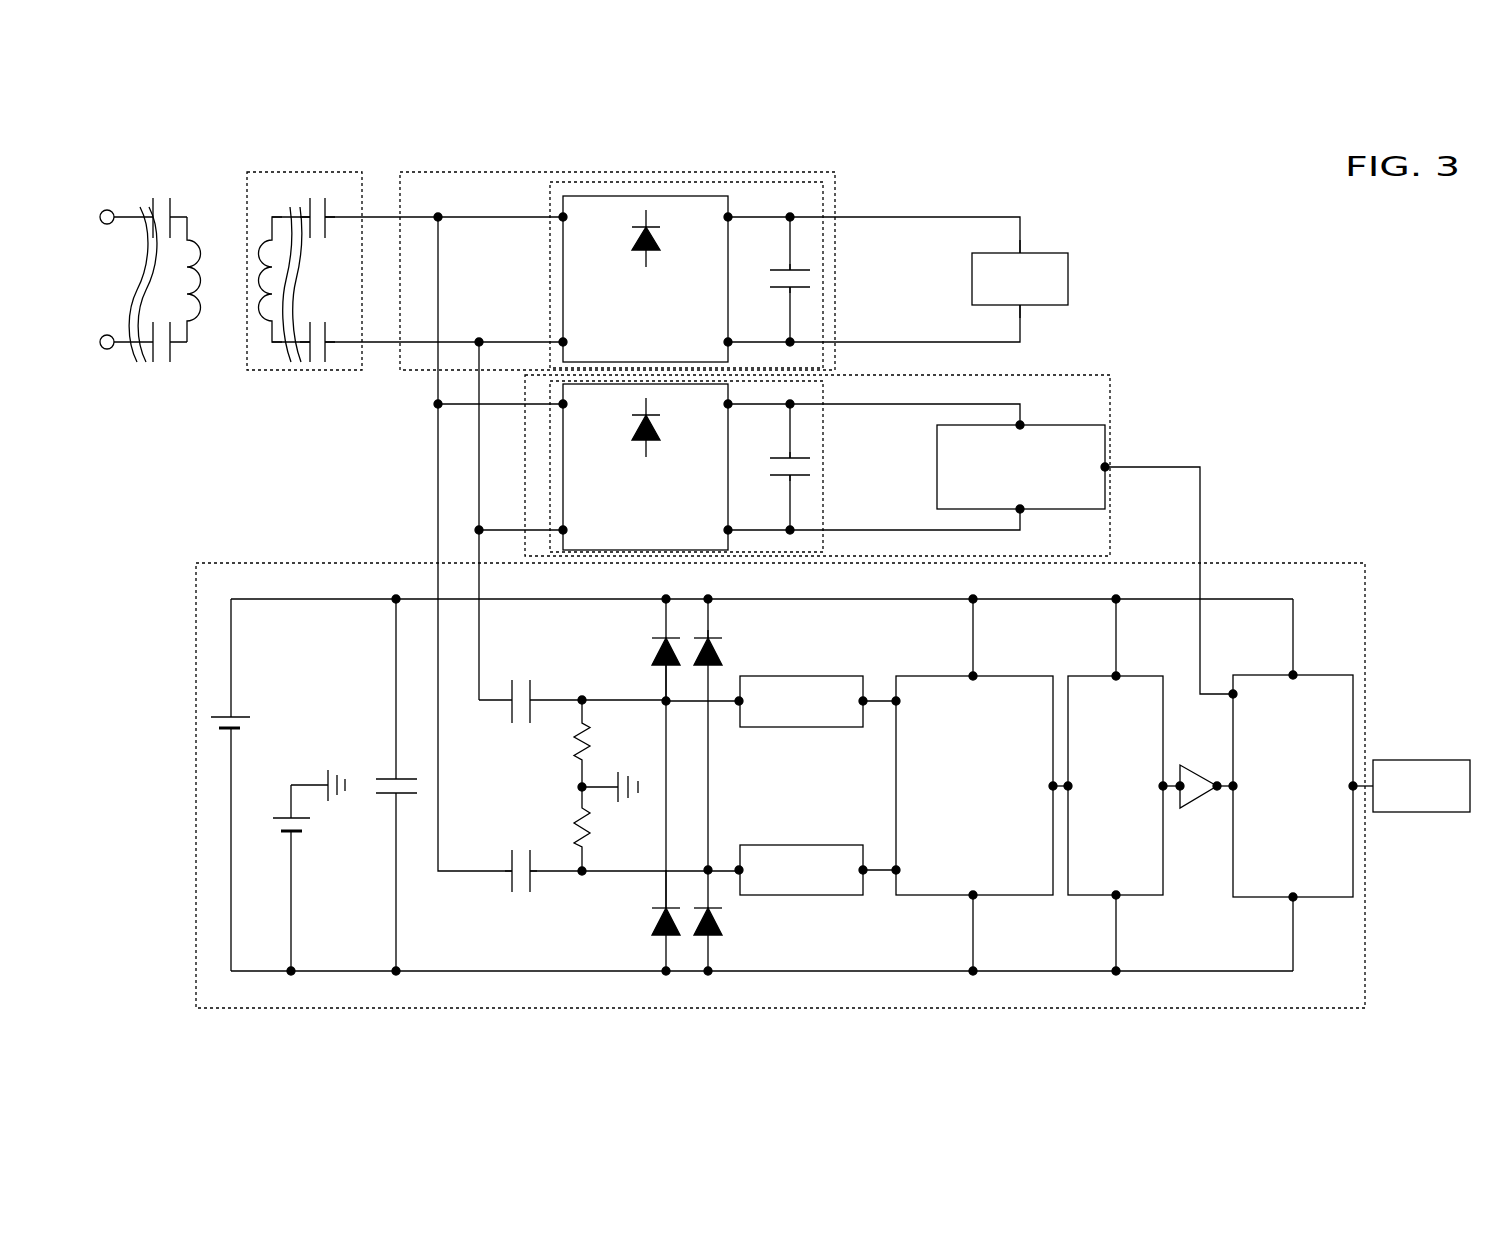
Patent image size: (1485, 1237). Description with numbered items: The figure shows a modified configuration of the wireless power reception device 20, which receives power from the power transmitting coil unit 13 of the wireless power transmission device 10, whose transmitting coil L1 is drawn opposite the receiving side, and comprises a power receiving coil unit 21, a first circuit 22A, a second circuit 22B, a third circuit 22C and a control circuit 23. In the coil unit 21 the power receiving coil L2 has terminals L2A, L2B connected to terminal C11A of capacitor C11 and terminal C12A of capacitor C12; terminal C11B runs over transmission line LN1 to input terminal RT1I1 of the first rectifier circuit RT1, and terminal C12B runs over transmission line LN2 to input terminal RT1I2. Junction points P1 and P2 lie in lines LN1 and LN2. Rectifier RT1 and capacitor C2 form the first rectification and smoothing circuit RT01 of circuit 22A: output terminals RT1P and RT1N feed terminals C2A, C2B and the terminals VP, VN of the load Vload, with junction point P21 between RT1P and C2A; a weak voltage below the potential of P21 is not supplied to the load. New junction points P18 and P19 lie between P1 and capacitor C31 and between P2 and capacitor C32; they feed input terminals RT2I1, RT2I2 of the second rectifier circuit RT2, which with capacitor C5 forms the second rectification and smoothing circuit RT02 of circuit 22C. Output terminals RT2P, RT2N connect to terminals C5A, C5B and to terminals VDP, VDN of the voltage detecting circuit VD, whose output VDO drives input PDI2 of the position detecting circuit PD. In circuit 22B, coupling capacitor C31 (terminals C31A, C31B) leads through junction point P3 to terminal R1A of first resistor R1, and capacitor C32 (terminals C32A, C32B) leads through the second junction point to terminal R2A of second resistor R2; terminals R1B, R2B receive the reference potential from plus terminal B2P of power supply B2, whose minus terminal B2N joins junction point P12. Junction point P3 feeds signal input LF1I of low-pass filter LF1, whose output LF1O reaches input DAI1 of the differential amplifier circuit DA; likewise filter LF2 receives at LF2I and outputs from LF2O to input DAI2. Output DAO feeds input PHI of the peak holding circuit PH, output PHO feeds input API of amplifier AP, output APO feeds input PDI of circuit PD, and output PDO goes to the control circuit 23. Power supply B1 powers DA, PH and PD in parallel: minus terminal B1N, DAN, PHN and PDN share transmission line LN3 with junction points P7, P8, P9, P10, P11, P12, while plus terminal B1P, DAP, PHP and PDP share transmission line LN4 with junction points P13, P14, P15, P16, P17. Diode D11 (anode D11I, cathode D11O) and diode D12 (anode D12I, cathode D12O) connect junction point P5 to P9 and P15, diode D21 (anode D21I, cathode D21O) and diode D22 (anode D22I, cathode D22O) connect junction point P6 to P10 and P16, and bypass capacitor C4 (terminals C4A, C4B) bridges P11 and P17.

The wireless power transmission device 10 is at (132, 210).
The power transmitting coil unit 13 is at (126, 342).
The primary coil L1 is at (185, 275).
The power receiving coil unit 21 is at (247, 310).
The power receiving coil L2 is at (253, 238).
The terminal of power receiving coil L2A is at (260, 212).
The terminal of power receiving coil L2B is at (268, 346).
The capacitor C11 is at (320, 194).
The terminal of capacitor C11 C11A is at (305, 212).
The terminal of capacitor C11 C11B is at (332, 210).
The capacitor C12 is at (313, 372).
The terminal of capacitor C12 C12A is at (303, 352).
The terminal of capacitor C12 C12B is at (332, 352).
The transmission line LN1 is at (525, 216).
The transmission line LN2 is at (520, 341).
The junction point P1 is at (440, 215).
The junction point P2 is at (479, 340).
The junction point P18 is at (436, 406).
The first rectification and smoothing circuit RT01 is at (548, 250).
The first circuit 22A is at (838, 184).
The first rectifier circuit RT1 is at (708, 195).
The input terminal RT1I1 is at (567, 213).
The input terminal RT1I2 is at (568, 336).
The plus output terminal RT1P is at (734, 213).
The minus output terminal RT1N is at (736, 349).
The junction point P21 is at (795, 215).
The capacitor C2 is at (815, 278).
The terminal of capacitor C2 C2A is at (800, 264).
The terminal of capacitor C2 C2B is at (800, 294).
The wireless power reception device 20 is at (927, 188).
The load Vload is at (1068, 280).
The plus power supply terminal of load VP is at (1024, 248).
The minus power supply terminal of load VN is at (1024, 310).
The third circuit 22C is at (1090, 376).
The second rectification and smoothing circuit RT02 is at (826, 548).
The second rectifier circuit RT2 is at (730, 430).
The plus output terminal RT2P is at (735, 398).
The minus output terminal RT2N is at (722, 523).
The input terminal RT2I1 is at (557, 410).
The input terminal RT2I2 is at (568, 524).
The junction point P19 is at (477, 531).
The junction point P15 is at (711, 596).
The capacitor C5 is at (815, 467).
The terminal of capacitor C5 C5A is at (800, 452).
The terminal of capacitor C5 C5B is at (800, 482).
The voltage detecting circuit VD is at (1106, 447).
The plus terminal VDP is at (1028, 422).
The minus terminal VDN is at (1028, 516).
The signal output terminal VDO is at (1111, 472).
The second circuit 22B is at (1330, 562).
The transmission line LN3 is at (1205, 973).
The transmission line LN4 is at (1248, 598).
The junction point P17 is at (394, 597).
The junction point P16 is at (664, 598).
The junction point P14 is at (975, 598).
The junction point P13 is at (1118, 598).
The junction point P12 is at (291, 974).
The junction point P11 is at (396, 974).
The junction point P10 is at (665, 974).
The junction point P9 is at (708, 974).
The junction point P8 is at (974, 974).
The junction point P7 is at (1117, 974).
The junction point P6 is at (681, 786).
The junction point P5 is at (666, 974).
The junction point P3 is at (588, 637).
The power supply B1 is at (210, 725).
The plus terminal B1P is at (211, 713).
The minus terminal B1N is at (211, 734).
The power supply B2 is at (273, 831).
The plus terminal B2P is at (286, 813).
The minus terminal B2N is at (300, 838).
The capacitor C4 is at (386, 802).
The terminal of capacitor C4 C4A is at (395, 800).
The terminal of capacitor C4 C4B is at (386, 775).
The capacitor C32 is at (510, 675).
The terminal of capacitor C32 C32A is at (506, 712).
The terminal of capacitor C32 C32B is at (530, 676).
The capacitor C31 is at (514, 847).
The terminal of capacitor C31 C31A is at (508, 878).
The terminal of capacitor C31 C31B is at (535, 878).
The first resistor R1 is at (601, 827).
The terminal of first resistor R1A is at (578, 863).
The terminal of first resistor R1B is at (588, 780).
The second resistor R2 is at (570, 742).
The terminal of second resistor R2A is at (580, 695).
The terminal of second resistor R2B is at (610, 787).
The diode D11 is at (723, 925).
The anode terminal D11I is at (720, 945).
The cathode terminal D11O is at (716, 898).
The diode D12 is at (724, 647).
The anode terminal D12I is at (718, 675).
The cathode terminal D12O is at (711, 597).
The diode D21 is at (651, 930).
The anode terminal D21I is at (659, 940).
The cathode terminal D21O is at (677, 900).
The diode D22 is at (651, 643).
The anode terminal D22I is at (670, 673).
The cathode terminal D22O is at (664, 599).
The low-pass filter LF1 is at (834, 897).
The signal input terminal LF1I is at (736, 876).
The signal output terminal LF1O is at (866, 866).
The low-pass filter LF2 is at (832, 675).
The signal input terminal LF2I is at (736, 696).
The signal output terminal LF2O is at (868, 696).
The differential amplifier circuit DA is at (1000, 898).
The first signal input terminal DAI1 is at (890, 878).
The second signal input terminal DAI2 is at (892, 708).
The plus power supply terminal DAP is at (980, 670).
The minus power supply terminal DAN is at (968, 905).
The signal output terminal DAO is at (1048, 795).
The peak holding circuit PH is at (1095, 673).
The signal input terminal PHI is at (1065, 778).
The signal output terminal PHO is at (1167, 778).
The plus power supply terminal PHP is at (1120, 670).
The minus power supply terminal PHN is at (1122, 905).
The amplifier AP is at (1197, 764).
The signal input terminal API is at (1177, 797).
The signal output terminal APO is at (1215, 797).
The position detecting circuit PD is at (1340, 675).
The signal input terminal PDI is at (1229, 797).
The signal input terminal PDI2 is at (1225, 690).
The plus power supply terminal PDP is at (1297, 668).
The minus power supply terminal PDN is at (1297, 905).
The signal output terminal PDO is at (1358, 793).
The control circuit 23 is at (1422, 759).